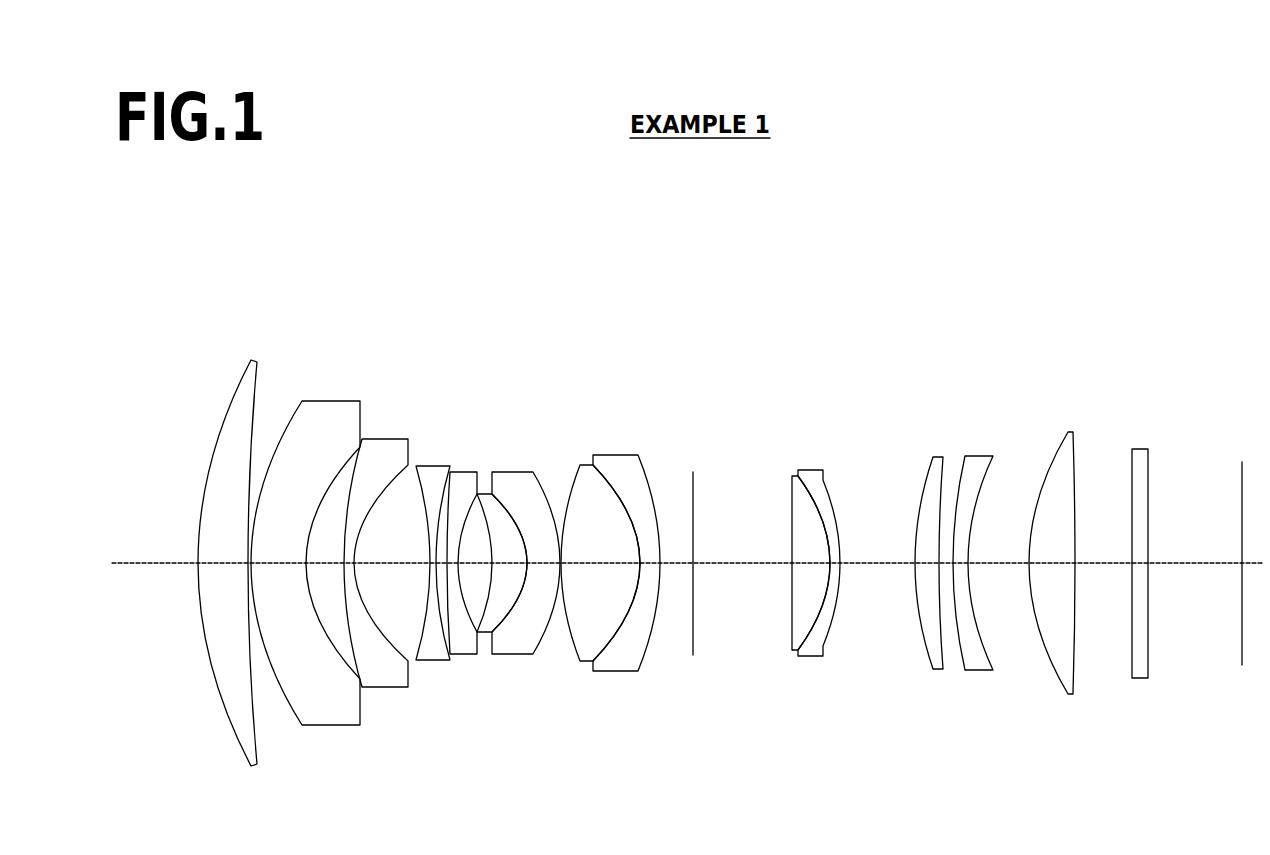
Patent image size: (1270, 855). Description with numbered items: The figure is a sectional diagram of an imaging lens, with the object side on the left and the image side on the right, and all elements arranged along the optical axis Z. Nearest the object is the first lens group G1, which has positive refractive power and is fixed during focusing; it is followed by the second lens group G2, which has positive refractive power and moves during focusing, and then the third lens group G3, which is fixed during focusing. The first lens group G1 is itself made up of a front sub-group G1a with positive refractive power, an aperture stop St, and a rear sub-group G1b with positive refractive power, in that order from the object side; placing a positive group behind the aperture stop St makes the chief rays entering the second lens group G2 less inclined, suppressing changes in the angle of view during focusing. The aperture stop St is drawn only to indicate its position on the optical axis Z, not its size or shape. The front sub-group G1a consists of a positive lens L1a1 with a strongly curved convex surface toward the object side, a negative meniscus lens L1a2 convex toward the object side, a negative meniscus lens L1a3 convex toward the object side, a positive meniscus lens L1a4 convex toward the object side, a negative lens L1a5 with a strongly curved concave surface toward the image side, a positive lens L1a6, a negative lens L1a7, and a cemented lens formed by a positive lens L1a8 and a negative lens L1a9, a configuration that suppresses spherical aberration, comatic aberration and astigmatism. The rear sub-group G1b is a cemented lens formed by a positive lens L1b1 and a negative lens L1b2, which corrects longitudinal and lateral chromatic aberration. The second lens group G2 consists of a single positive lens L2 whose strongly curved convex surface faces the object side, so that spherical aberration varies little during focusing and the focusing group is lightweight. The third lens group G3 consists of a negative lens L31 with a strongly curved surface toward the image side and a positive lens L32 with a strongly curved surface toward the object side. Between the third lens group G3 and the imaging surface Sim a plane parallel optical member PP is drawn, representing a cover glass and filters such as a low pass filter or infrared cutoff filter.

The first lens group G1 is at (213, 225).
The 1a lens group G1a is at (213, 264).
The 1b lens group G1b is at (653, 266).
The second lens group G2 is at (858, 226).
The third lens group G3 is at (1107, 226).
The positive lens L1a1 is at (255, 365).
The negative meniscus lens L1a2 is at (330, 408).
The negative meniscus lens L1a3 is at (385, 437).
The positive meniscus lens L1a4 is at (410, 465).
The negative lens L1a5 is at (463, 478).
The positive lens L1a6 is at (483, 496).
The negative lens L1a7 is at (510, 480).
The positive lens L1a8 is at (583, 463).
The negative lens L1a9 is at (620, 460).
The positive lens L1b1 is at (793, 474).
The negative lens L1b2 is at (812, 478).
The positive lens L2 is at (935, 462).
The negative lens L31 is at (978, 462).
The positive lens L32 is at (1071, 430).
The aperture stop St is at (693, 482).
The plane parallel optical member PP is at (1132, 667).
The imaging surface Sim is at (1242, 665).
The optical axis Z is at (155, 558).